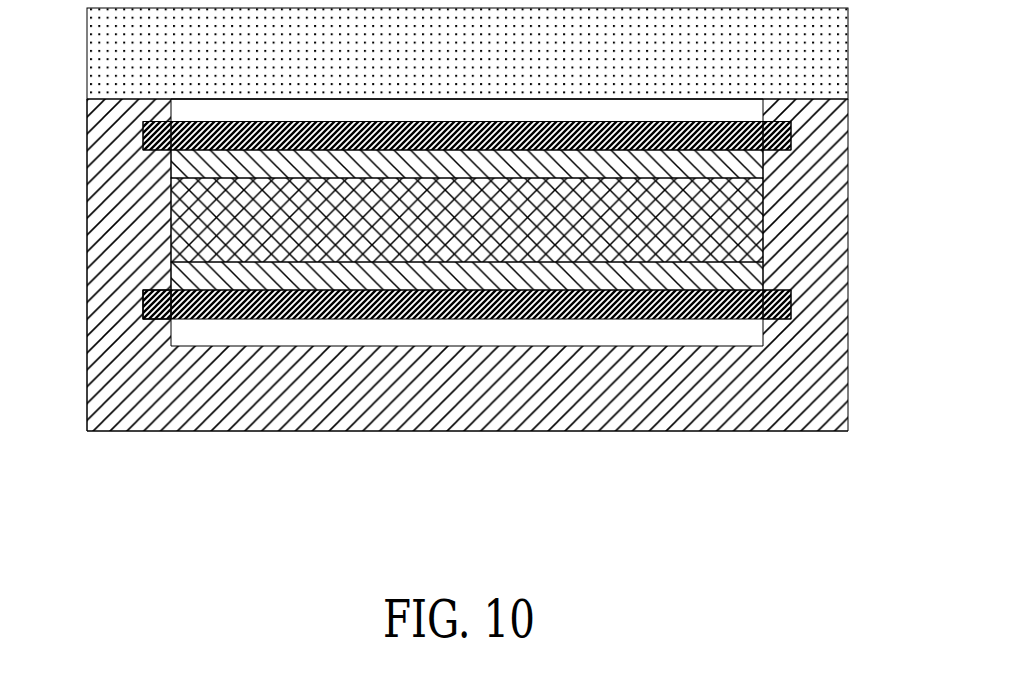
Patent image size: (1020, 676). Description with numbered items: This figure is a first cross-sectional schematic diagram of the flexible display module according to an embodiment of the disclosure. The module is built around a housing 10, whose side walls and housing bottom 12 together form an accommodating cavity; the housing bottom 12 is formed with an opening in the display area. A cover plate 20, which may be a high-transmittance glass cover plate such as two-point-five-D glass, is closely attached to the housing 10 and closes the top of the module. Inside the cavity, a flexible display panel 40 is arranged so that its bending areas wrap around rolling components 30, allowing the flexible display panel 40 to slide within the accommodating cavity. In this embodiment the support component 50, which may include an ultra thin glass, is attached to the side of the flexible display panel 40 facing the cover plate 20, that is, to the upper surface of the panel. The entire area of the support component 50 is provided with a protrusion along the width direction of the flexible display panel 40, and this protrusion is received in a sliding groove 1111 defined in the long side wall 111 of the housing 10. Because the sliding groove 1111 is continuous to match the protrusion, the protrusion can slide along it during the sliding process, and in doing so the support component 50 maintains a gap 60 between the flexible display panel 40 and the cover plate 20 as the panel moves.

The housing 10 is at (777, 401).
The housing bottom 12 is at (356, 437).
The cover plate 20 is at (780, 53).
The rolling components 30 is at (720, 202).
The flexible display panel 40 is at (735, 163).
The support component 50 is at (793, 304).
The gap 60 is at (728, 110).
The long side wall 111 is at (80, 274).
The sliding groove 1111 is at (145, 302).